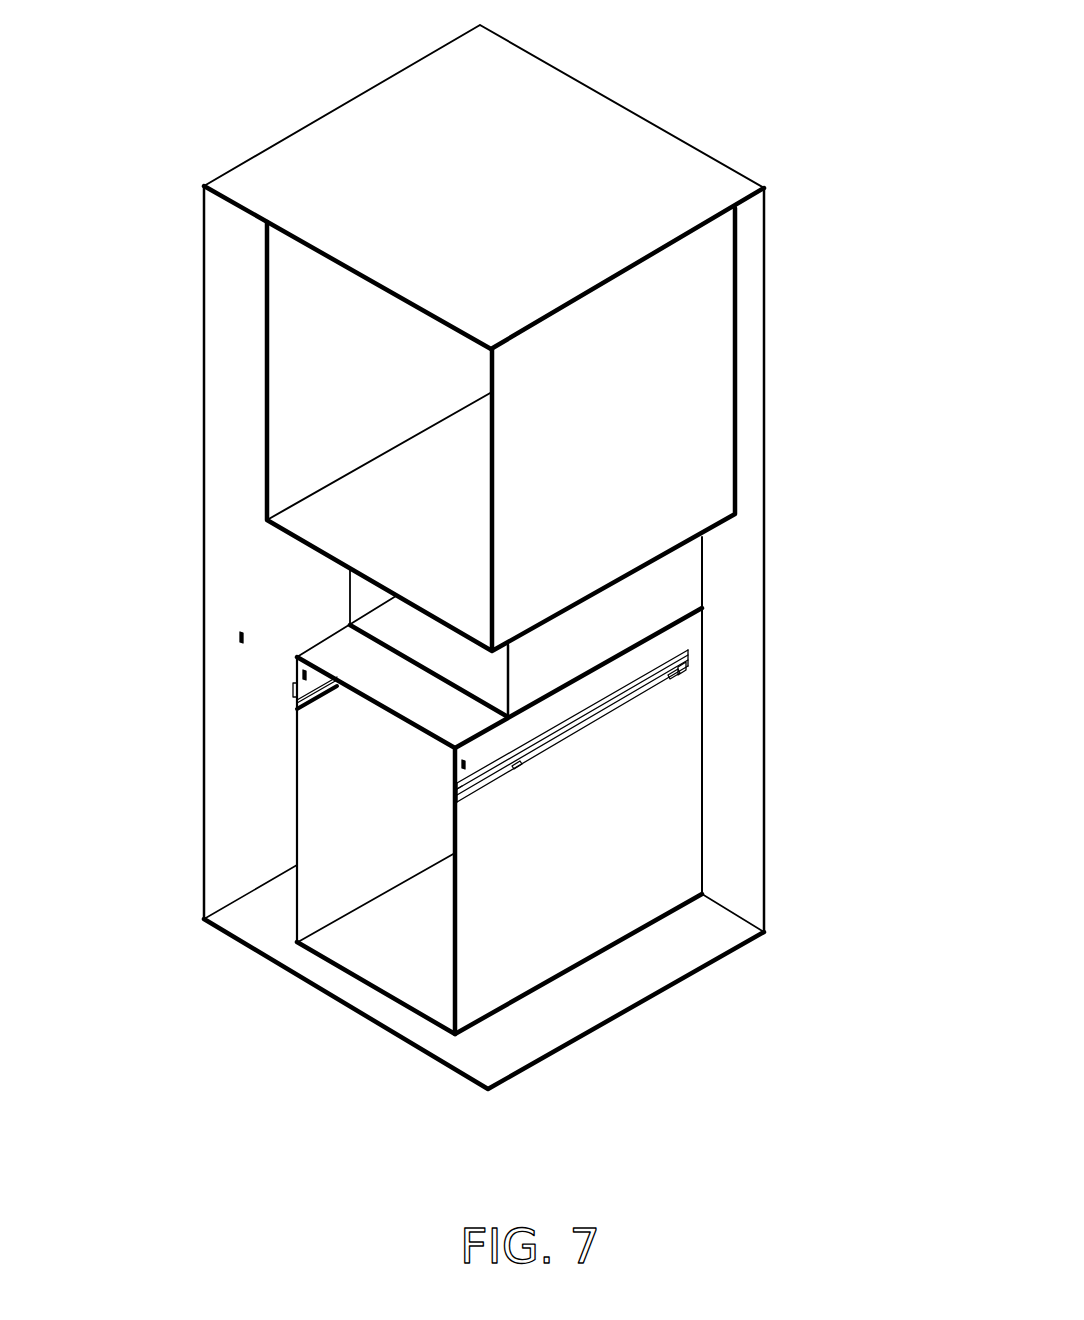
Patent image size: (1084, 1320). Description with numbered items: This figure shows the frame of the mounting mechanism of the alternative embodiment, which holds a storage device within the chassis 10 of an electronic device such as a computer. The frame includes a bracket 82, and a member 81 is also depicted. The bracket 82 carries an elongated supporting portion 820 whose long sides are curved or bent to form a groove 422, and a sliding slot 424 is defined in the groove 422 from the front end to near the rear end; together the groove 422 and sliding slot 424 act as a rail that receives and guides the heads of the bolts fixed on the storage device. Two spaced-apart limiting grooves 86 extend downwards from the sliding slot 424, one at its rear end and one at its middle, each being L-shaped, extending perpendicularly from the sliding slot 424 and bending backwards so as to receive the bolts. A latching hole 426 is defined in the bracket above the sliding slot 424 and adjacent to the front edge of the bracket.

The chassis 10 is at (235, 458).
The first module 81 is at (420, 962).
The bracket 82 is at (536, 947).
The groove 422 is at (297, 700).
The sliding slot 424 is at (617, 702).
The latching hole 426 is at (465, 765).
The limiting groove 86 is at (672, 673).
The supporting portion 820 is at (683, 670).